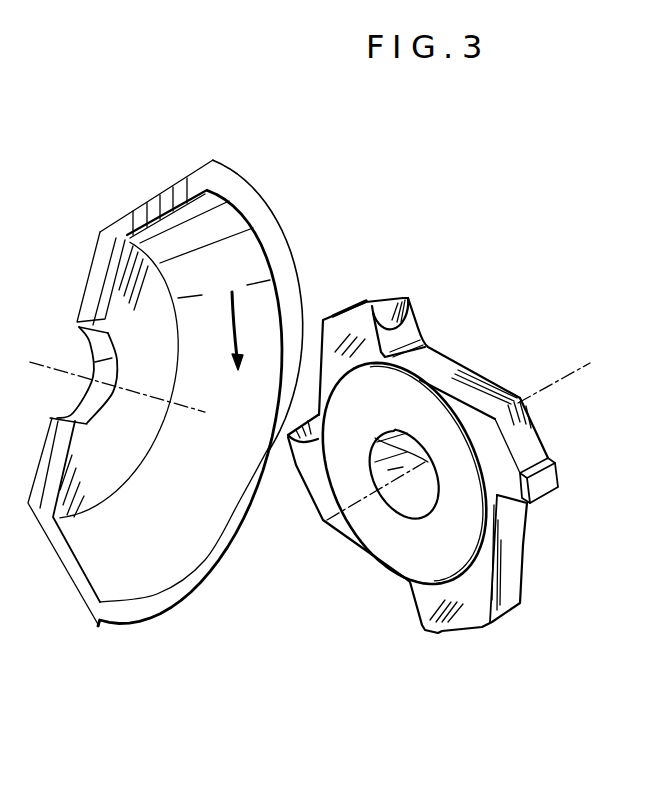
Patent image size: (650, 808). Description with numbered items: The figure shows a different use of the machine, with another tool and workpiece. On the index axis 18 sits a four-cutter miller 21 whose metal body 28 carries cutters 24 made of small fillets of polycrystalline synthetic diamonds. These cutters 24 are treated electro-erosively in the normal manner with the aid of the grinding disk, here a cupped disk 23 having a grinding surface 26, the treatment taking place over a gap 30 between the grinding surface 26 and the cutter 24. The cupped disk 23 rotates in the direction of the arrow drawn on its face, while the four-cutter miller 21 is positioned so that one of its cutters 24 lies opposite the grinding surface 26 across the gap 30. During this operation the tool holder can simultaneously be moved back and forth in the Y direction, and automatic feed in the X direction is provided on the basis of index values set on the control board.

The index axis 18 is at (566, 376).
The four-cutter miller 21 is at (407, 547).
The cupped disk 23 is at (147, 572).
The cutters 24 is at (398, 306).
The grinding surface 26 is at (247, 522).
The metal body 28 is at (423, 417).
The gap 30 is at (290, 432).